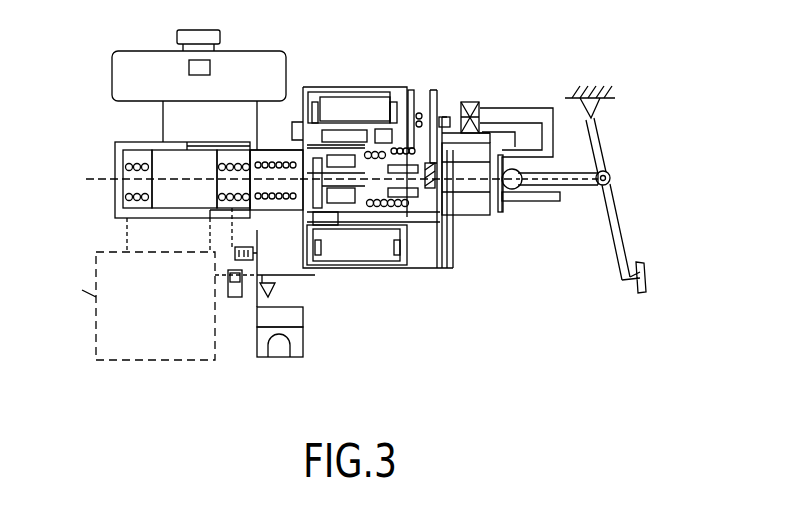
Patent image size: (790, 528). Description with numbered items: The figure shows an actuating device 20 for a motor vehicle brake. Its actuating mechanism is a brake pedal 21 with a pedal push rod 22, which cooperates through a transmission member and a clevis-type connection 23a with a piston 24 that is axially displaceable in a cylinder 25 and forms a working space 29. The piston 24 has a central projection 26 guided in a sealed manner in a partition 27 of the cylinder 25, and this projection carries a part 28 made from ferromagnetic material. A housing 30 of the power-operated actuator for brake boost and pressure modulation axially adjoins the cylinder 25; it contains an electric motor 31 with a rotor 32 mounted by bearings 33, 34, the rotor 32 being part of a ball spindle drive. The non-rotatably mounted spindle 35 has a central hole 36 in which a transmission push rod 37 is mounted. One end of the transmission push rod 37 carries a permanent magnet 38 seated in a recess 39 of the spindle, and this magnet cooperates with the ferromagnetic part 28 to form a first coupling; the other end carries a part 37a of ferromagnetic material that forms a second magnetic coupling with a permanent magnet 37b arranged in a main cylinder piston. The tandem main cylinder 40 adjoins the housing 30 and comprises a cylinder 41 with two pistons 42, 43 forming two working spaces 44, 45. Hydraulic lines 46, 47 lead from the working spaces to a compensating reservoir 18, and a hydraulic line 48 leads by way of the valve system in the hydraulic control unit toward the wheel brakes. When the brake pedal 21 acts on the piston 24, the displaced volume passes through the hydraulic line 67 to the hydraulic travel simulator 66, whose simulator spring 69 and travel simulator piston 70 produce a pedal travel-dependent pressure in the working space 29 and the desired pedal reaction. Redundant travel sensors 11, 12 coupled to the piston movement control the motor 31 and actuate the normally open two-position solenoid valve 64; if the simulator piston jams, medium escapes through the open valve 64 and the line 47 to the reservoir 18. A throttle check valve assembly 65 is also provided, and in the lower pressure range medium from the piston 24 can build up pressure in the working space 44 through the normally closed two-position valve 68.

The travel sensor 11 is at (468, 100).
The travel sensor 12 is at (468, 170).
The compensating reservoir 18 is at (148, 85).
The actuating device 20 is at (360, 46).
The brake pedal 21 is at (620, 223).
The pedal push rod 22 is at (567, 188).
The clevis 23a is at (525, 203).
The piston 24 is at (505, 207).
The cylinder 25 is at (419, 112).
The projection 26 is at (487, 138).
The partition 27 is at (443, 114).
The part made of ferromagnetic material 28 is at (453, 225).
The working space 29 is at (470, 208).
The housing 30 is at (308, 86).
The electric motor 31 is at (330, 92).
The rotor 32 is at (352, 125).
The bearing 33 is at (436, 115).
The bearing 34 is at (417, 102).
The spindle 35 is at (358, 200).
The hole 36 is at (373, 195).
The transmission push rod 37 is at (350, 200).
The part made of ferromagnetic material 37a is at (328, 205).
The permanent magnet 37b is at (303, 228).
The permanent magnet 38 is at (300, 123).
The recess 39 is at (418, 205).
The tandem main cylinder 40 is at (117, 132).
The cylinder 41 is at (188, 140).
The piston 42 is at (213, 244).
The piston 43 is at (170, 196).
The working space 44 is at (229, 217).
The working space 45 is at (118, 202).
The hydraulic line 46 is at (162, 127).
The hydraulic line 47 is at (255, 121).
The hydraulic line 48 is at (124, 238).
The 2/2 way valve 64 is at (259, 273).
The throttle check valve assembly 65 is at (263, 290).
The travel simulator 66 is at (278, 357).
The hydraulic line 67 is at (379, 270).
The 2/2 way valve 68 is at (233, 297).
The simulator spring 69 is at (300, 340).
The travel simulator piston 70 is at (300, 322).